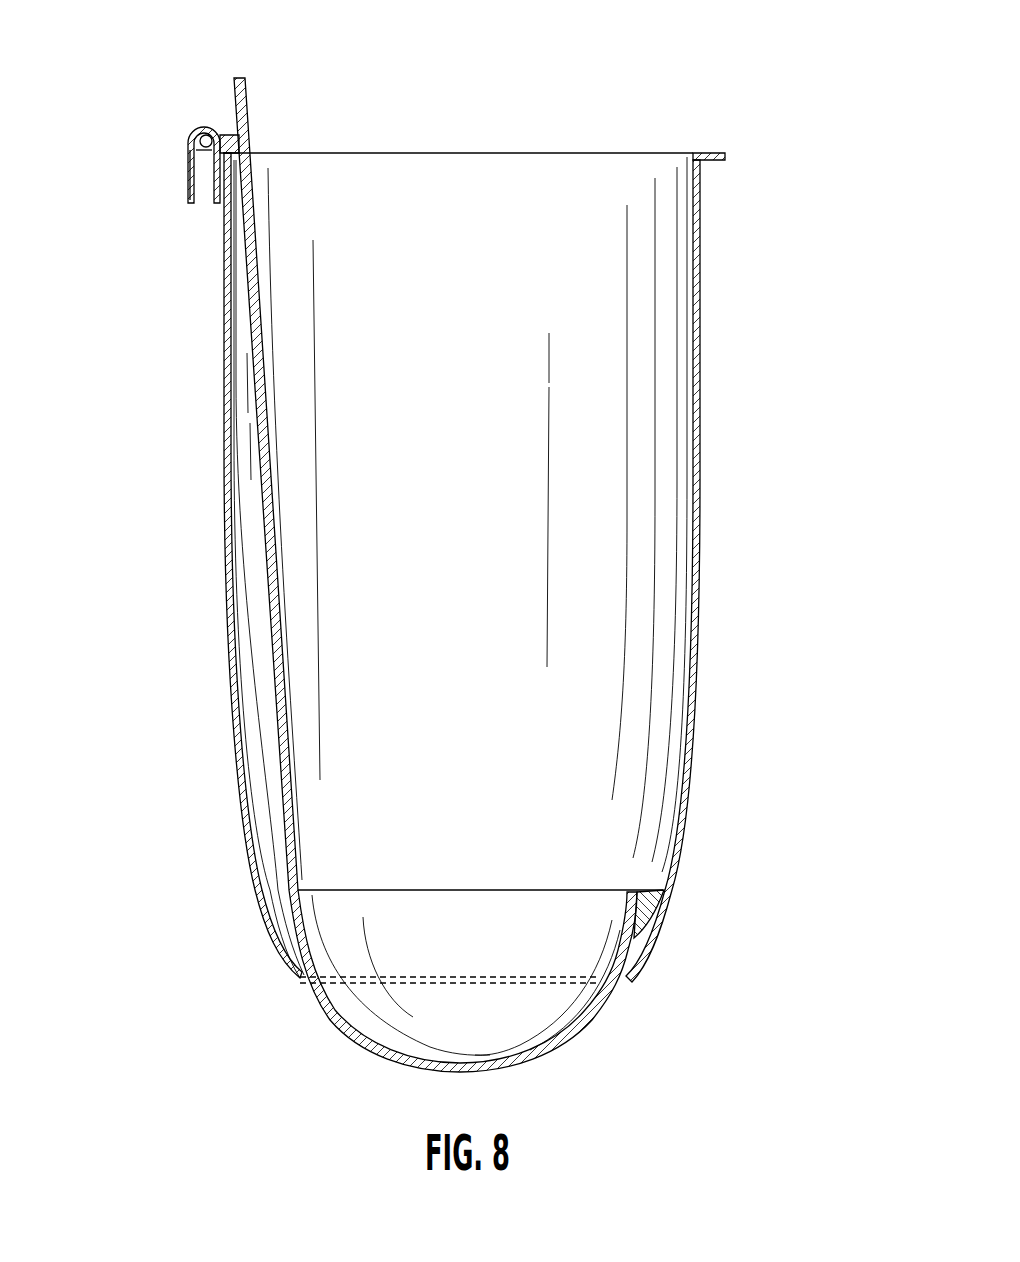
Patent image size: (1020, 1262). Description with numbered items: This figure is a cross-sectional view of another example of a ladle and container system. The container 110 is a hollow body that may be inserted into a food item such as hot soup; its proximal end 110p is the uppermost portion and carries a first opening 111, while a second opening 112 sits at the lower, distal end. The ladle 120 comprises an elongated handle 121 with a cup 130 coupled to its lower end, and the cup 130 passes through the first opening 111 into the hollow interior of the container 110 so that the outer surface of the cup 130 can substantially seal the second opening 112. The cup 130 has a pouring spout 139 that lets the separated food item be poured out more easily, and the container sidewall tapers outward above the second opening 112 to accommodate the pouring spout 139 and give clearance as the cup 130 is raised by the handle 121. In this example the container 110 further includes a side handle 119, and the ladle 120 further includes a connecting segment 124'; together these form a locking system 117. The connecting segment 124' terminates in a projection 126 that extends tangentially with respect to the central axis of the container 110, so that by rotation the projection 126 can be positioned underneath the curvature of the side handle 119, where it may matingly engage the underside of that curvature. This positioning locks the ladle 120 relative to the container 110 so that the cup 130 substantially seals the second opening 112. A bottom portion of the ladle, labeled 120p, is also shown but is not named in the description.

The container 110 is at (704, 503).
The proximal end 110p is at (706, 139).
The first opening 111 is at (495, 146).
The second opening 112 is at (552, 983).
The locking system 117 is at (171, 127).
The side handle 119 is at (185, 177).
The ladle 120 is at (275, 106).
The insert bottom portion 120p is at (600, 980).
The handle 121 is at (281, 638).
The connecting segment 124' is at (210, 82).
The projection 126 is at (208, 153).
The cup 130 is at (482, 1022).
The pouring spout 139 is at (648, 888).